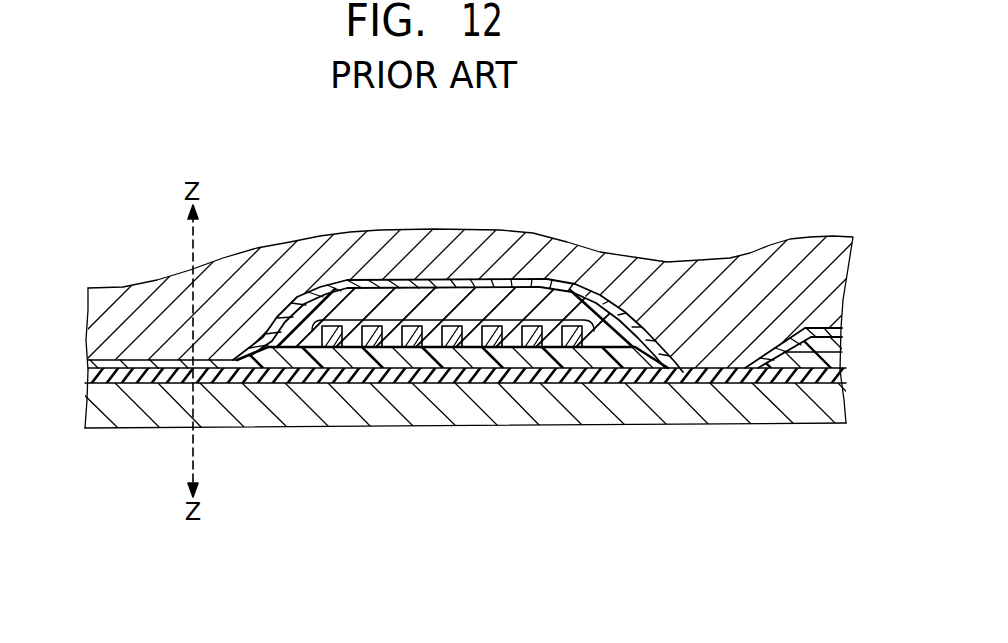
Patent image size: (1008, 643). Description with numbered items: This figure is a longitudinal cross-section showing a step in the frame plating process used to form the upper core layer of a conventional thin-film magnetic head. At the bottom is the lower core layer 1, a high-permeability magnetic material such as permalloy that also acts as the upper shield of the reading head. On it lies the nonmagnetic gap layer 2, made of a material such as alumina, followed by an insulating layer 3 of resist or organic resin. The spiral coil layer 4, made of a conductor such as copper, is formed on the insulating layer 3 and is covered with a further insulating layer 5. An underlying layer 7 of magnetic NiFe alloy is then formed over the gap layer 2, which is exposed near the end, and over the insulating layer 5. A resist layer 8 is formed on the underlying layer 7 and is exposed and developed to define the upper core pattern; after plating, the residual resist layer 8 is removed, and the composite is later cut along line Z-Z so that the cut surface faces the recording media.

The lower core layer 1 is at (365, 408).
The gap layer 2 is at (514, 381).
The insulating layer 3 is at (594, 383).
The coil layer 4 is at (453, 317).
The insulating layer 5 is at (578, 303).
The underlying layer 7 is at (374, 282).
The resist layer 8 is at (498, 238).